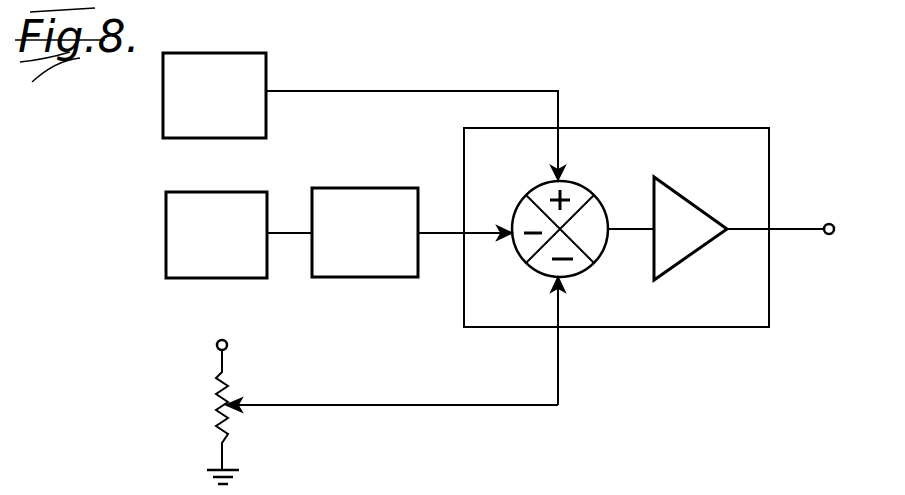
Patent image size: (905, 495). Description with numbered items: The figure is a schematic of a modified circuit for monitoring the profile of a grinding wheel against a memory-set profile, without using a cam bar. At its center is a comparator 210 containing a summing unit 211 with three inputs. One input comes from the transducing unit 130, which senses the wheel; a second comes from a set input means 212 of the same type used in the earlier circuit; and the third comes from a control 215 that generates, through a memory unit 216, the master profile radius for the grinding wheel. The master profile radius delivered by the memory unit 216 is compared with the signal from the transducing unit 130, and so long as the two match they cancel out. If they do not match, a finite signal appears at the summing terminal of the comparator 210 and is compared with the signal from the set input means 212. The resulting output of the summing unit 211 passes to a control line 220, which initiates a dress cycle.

The transducing unit 130 is at (221, 67).
The comparator 210 is at (692, 129).
The summing unit 211 is at (596, 212).
The set input means 212 is at (200, 415).
The control 215 is at (187, 232).
The memory unit 216 is at (358, 208).
The control line 220 is at (795, 226).